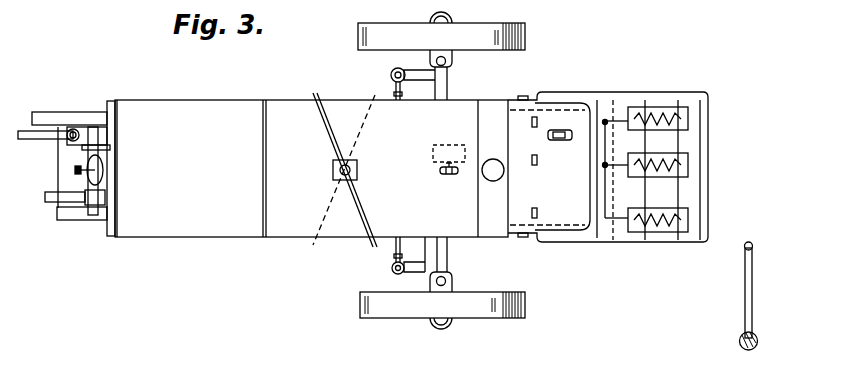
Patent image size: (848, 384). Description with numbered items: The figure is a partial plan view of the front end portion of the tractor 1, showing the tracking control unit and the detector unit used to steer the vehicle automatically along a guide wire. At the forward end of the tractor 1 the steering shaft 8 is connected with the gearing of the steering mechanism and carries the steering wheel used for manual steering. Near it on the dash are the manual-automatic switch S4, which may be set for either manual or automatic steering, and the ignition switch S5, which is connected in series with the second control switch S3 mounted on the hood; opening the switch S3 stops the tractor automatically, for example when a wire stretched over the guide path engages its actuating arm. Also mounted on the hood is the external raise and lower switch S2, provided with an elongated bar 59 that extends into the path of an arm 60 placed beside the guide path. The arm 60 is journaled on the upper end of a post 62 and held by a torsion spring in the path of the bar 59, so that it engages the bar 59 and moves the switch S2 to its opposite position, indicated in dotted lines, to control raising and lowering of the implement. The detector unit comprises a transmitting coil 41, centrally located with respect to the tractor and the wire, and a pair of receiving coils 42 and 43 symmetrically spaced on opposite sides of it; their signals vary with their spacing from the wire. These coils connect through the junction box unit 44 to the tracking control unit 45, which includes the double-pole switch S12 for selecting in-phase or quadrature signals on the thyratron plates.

The tractor 1 is at (482, 99).
The steering shaft 8 is at (75, 170).
The manual-automatic switch S4 is at (105, 127).
The ignition switch S5 is at (100, 173).
The elongated bar 59 is at (372, 95).
The external raise and lower switch S2 is at (357, 172).
The second control switch S3 is at (445, 149).
The switch S12 is at (562, 141).
The tracking control unit 45 is at (565, 128).
The receiving coil 43 is at (690, 121).
The transmitting coil 41 is at (690, 166).
The receiving coil 42 is at (690, 220).
The junction box unit 44 is at (568, 215).
The arm 60 is at (744, 252).
The post 62 is at (751, 354).